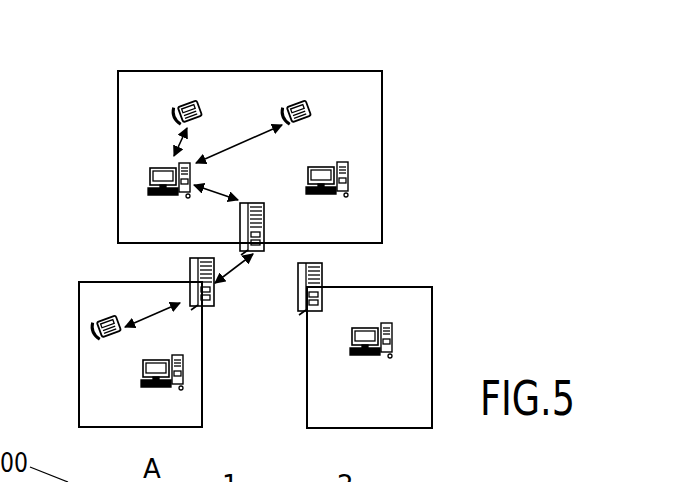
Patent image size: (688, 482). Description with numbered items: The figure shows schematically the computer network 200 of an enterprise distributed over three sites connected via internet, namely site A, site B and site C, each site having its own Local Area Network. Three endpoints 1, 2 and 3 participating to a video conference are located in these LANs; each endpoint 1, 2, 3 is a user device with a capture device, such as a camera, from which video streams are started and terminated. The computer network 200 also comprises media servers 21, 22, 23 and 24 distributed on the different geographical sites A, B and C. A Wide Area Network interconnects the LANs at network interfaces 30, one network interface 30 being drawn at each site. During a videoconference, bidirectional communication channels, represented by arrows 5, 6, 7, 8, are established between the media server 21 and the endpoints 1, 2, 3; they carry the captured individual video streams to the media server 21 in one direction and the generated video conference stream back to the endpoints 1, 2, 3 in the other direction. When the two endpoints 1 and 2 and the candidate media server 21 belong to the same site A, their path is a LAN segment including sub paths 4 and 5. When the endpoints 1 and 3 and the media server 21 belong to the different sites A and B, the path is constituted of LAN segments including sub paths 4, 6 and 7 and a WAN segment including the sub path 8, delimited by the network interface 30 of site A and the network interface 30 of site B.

The computer network 200 is at (394, 63).
The site A is at (140, 71).
The site B is at (88, 282).
The site C is at (425, 287).
The endpoint 1 is at (202, 106).
The endpoint 2 is at (313, 110).
The endpoint 3 is at (94, 330).
The sub path 4 is at (176, 142).
The sub path 5 is at (244, 141).
The sub path 6 is at (152, 316).
The sub path 7 is at (217, 191).
The sub path 8 is at (235, 268).
The media server 21 is at (150, 177).
The media server 22 is at (348, 173).
The media server 23 is at (143, 383).
The media server 24 is at (392, 338).
The network interface 30 is at (265, 237).